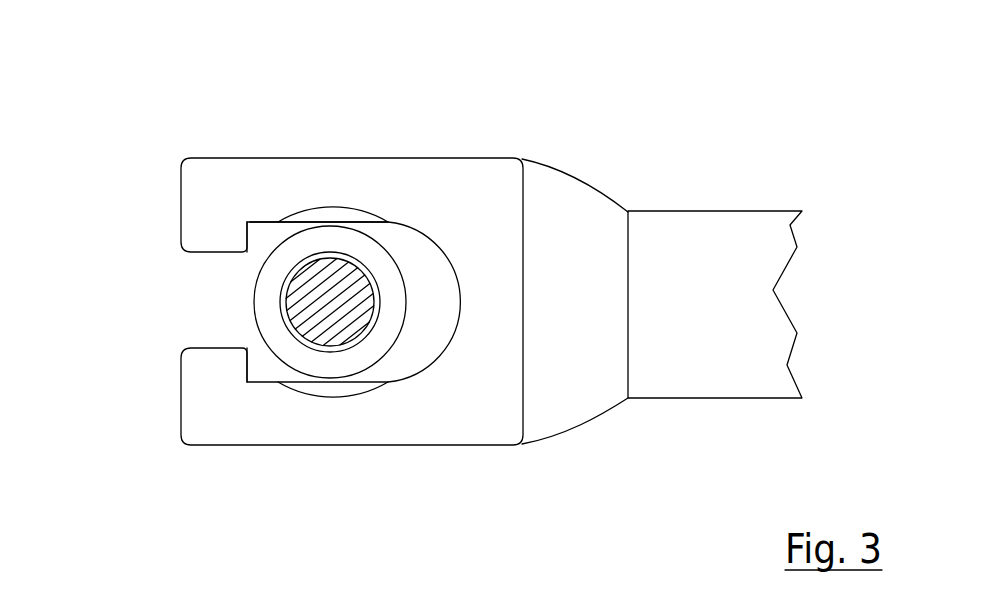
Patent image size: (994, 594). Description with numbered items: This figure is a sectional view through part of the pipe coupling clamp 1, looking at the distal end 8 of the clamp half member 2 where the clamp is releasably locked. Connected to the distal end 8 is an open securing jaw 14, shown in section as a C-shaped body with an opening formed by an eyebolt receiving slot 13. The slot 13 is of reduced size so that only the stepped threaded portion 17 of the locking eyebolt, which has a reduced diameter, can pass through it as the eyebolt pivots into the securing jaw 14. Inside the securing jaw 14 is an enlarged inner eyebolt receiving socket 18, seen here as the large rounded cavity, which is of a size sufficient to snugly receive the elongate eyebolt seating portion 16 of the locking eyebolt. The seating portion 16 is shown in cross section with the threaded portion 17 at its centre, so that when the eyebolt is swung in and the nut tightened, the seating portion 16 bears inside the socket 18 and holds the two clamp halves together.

The pipe coupling clamp 1 is at (333, 278).
The clamp half member 2 is at (722, 242).
The distal end 8 is at (325, 187).
The eyebolt receiving slot 13 is at (202, 290).
The securing jaw 14 is at (372, 422).
The elongate eyebolt seating portion 16 is at (312, 357).
The stepped threaded portion 17 is at (341, 281).
The inner eyebolt receiving socket 18 is at (265, 237).